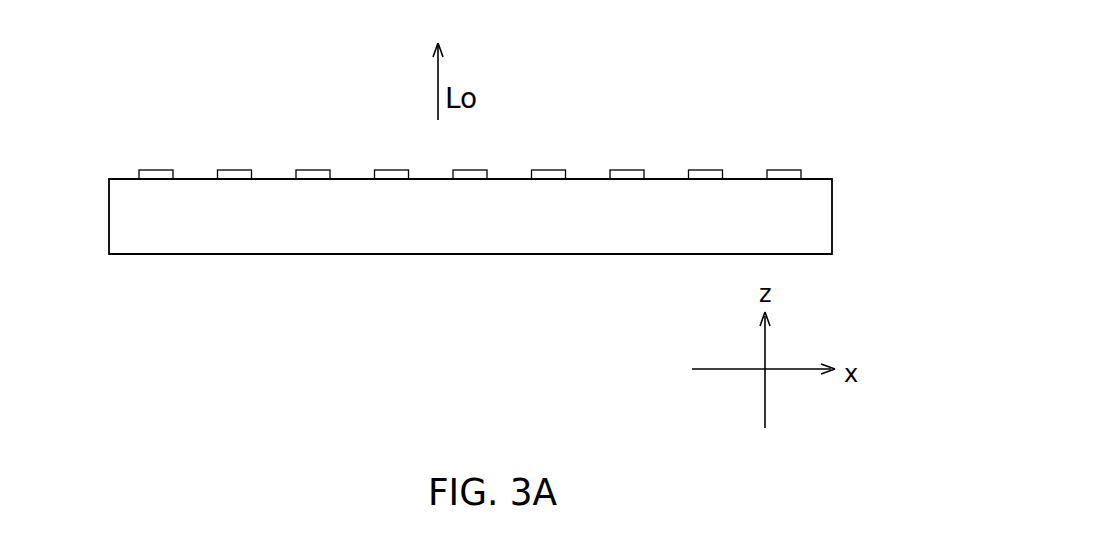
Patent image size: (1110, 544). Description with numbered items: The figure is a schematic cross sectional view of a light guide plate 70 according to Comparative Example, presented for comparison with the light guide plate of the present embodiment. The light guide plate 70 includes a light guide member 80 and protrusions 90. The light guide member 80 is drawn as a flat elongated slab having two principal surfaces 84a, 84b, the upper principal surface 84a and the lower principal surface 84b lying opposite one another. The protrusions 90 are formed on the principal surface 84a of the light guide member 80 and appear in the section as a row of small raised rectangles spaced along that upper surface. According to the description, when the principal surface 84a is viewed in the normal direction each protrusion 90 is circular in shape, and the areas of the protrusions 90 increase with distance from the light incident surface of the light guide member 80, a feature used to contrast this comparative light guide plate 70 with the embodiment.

The light guide plate 70 is at (730, 81).
The light guide member 80 is at (101, 211).
The principal surface 84a is at (122, 178).
The principal surface 84b is at (155, 254).
The protrusions 90 is at (232, 170).